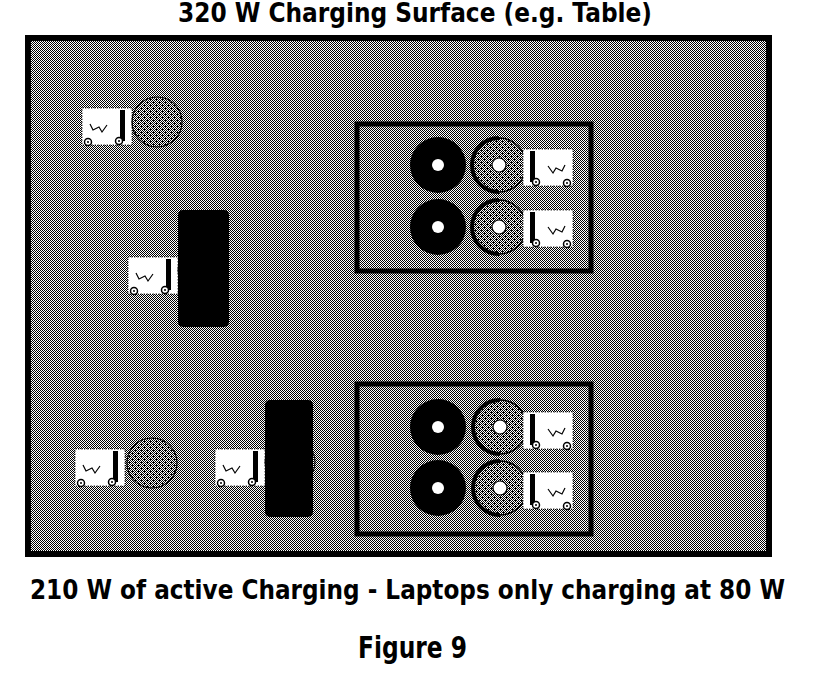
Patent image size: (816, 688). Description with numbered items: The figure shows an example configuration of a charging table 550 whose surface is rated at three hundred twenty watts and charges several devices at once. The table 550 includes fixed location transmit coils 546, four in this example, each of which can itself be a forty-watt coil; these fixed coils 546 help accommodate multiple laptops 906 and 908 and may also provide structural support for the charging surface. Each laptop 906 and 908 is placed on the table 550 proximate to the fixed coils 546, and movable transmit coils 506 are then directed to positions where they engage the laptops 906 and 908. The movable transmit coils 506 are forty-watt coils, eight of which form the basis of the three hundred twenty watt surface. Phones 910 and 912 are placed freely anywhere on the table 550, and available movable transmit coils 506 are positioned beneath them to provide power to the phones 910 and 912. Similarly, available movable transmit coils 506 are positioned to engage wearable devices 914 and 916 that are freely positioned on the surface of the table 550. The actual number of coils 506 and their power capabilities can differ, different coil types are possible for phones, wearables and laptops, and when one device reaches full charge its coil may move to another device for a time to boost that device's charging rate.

The table 550 is at (677, 513).
The laptop 906 is at (593, 256).
The laptop 908 is at (587, 425).
The fixed location transmit coil 546 is at (407, 177).
The movable transmit coil 506 is at (87, 133).
The phone 910 is at (178, 215).
The phone 912 is at (273, 405).
The wearable device 914 is at (158, 450).
The wearable device 916 is at (147, 107).